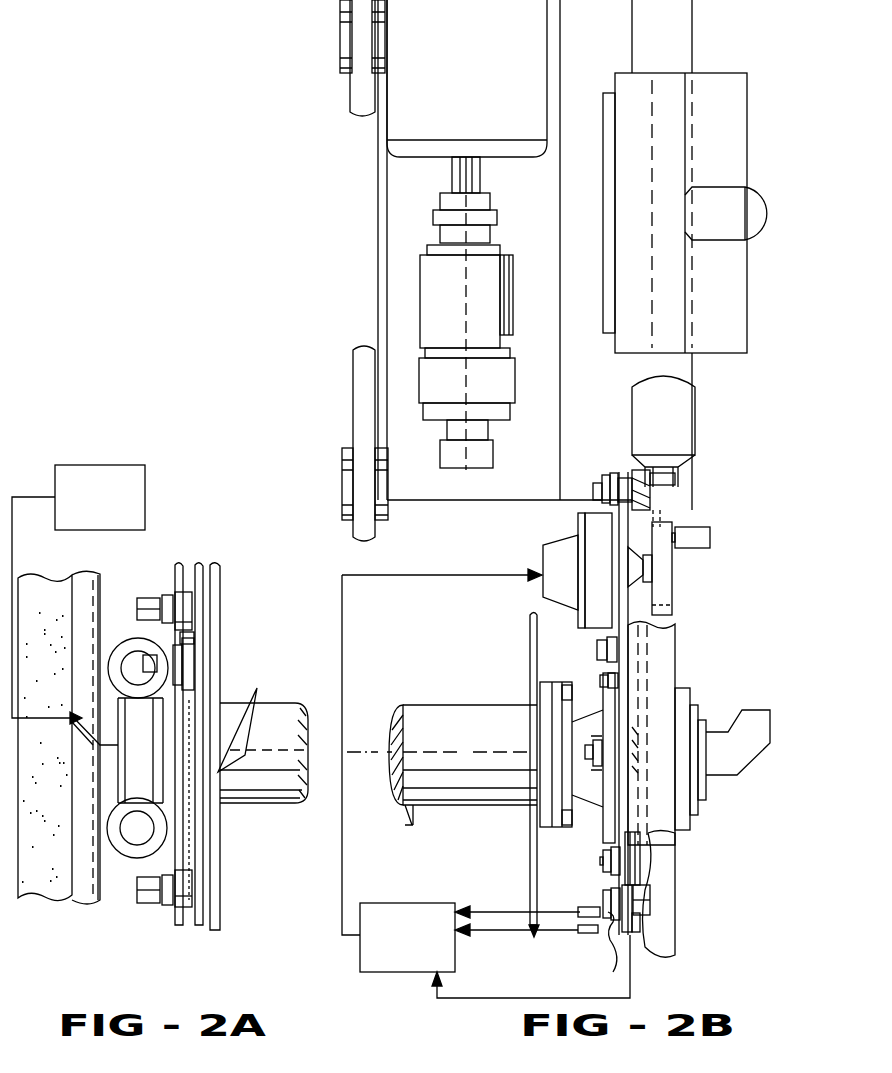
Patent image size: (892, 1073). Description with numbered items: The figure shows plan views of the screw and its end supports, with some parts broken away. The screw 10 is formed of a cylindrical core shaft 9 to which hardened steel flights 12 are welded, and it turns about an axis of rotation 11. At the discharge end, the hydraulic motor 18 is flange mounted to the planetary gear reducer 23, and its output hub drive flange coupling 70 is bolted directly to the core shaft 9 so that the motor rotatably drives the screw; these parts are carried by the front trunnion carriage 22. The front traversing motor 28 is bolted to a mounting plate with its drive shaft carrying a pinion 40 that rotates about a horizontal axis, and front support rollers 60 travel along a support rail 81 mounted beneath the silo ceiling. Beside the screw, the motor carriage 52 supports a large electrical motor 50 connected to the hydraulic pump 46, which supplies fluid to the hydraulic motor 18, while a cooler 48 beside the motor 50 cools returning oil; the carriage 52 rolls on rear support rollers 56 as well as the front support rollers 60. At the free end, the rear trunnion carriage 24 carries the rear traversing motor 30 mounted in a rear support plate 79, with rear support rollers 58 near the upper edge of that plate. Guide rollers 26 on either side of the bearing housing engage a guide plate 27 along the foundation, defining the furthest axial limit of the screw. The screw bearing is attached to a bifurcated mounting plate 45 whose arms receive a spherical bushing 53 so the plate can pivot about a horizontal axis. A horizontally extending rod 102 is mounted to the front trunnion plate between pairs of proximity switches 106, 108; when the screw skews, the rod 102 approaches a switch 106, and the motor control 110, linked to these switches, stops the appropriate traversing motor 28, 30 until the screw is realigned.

In FIG. 2A, the cylindrical core shaft 9 is at (275, 705).
In FIG. 2B, the cylindrical core shaft 9 is at (495, 710).
In FIG. 2B, the screw 10 is at (430, 700).
In FIG. 2B, the axis of rotation 11 is at (376, 760).
In FIG. 2B, the flights 12 is at (406, 820).
In FIG. 2B, the hydraulic motor 18 is at (738, 760).
In FIG. 2B, the front trunnion carriage 22 is at (632, 722).
In FIG. 2B, the planetary gear reducer 23 is at (590, 790).
In FIG. 2A, the rear trunnion carriage 24 is at (140, 761).
In FIG. 2A, the guide roller 26 is at (108, 668).
In FIG. 2A, the guide plate 27 is at (108, 903).
In FIG. 2B, the front traversing motor 28 is at (545, 560).
In FIG. 2A, the rear traversing motor 30 is at (92, 748).
In FIG. 2B, the pinion 40 is at (676, 600).
In FIG. 2A, the bifurcated mounting plate 45 is at (190, 638).
In FIG. 2B, the hydraulic pump 46 is at (440, 315).
In FIG. 2B, the cooler 48 is at (728, 288).
In FIG. 2B, the electrical motor 50 is at (397, 125).
In FIG. 2B, the motor carriage 52 is at (385, 230).
In FIG. 2A, the spherical bushing 53 is at (196, 662).
In FIG. 2B, the rear support rollers 56 is at (345, 60).
In FIG. 2A, the rear support rollers 58 is at (185, 612).
In FIG. 2B, the front support rollers 60 is at (655, 497).
In FIG. 2B, the drive flange coupling 70 is at (543, 812).
In FIG. 2A, the rear support plate 79 is at (175, 865).
In FIG. 2B, the support rail 81 is at (667, 853).
In FIG. 2B, the rod 102 is at (597, 954).
In FIG. 2B, the proximity switches 106 is at (592, 935).
In FIG. 2B, the proximity switches 108 is at (588, 906).
In FIG. 2A, the motor control 110 is at (145, 505).
In FIG. 2B, the motor control 110 is at (360, 960).